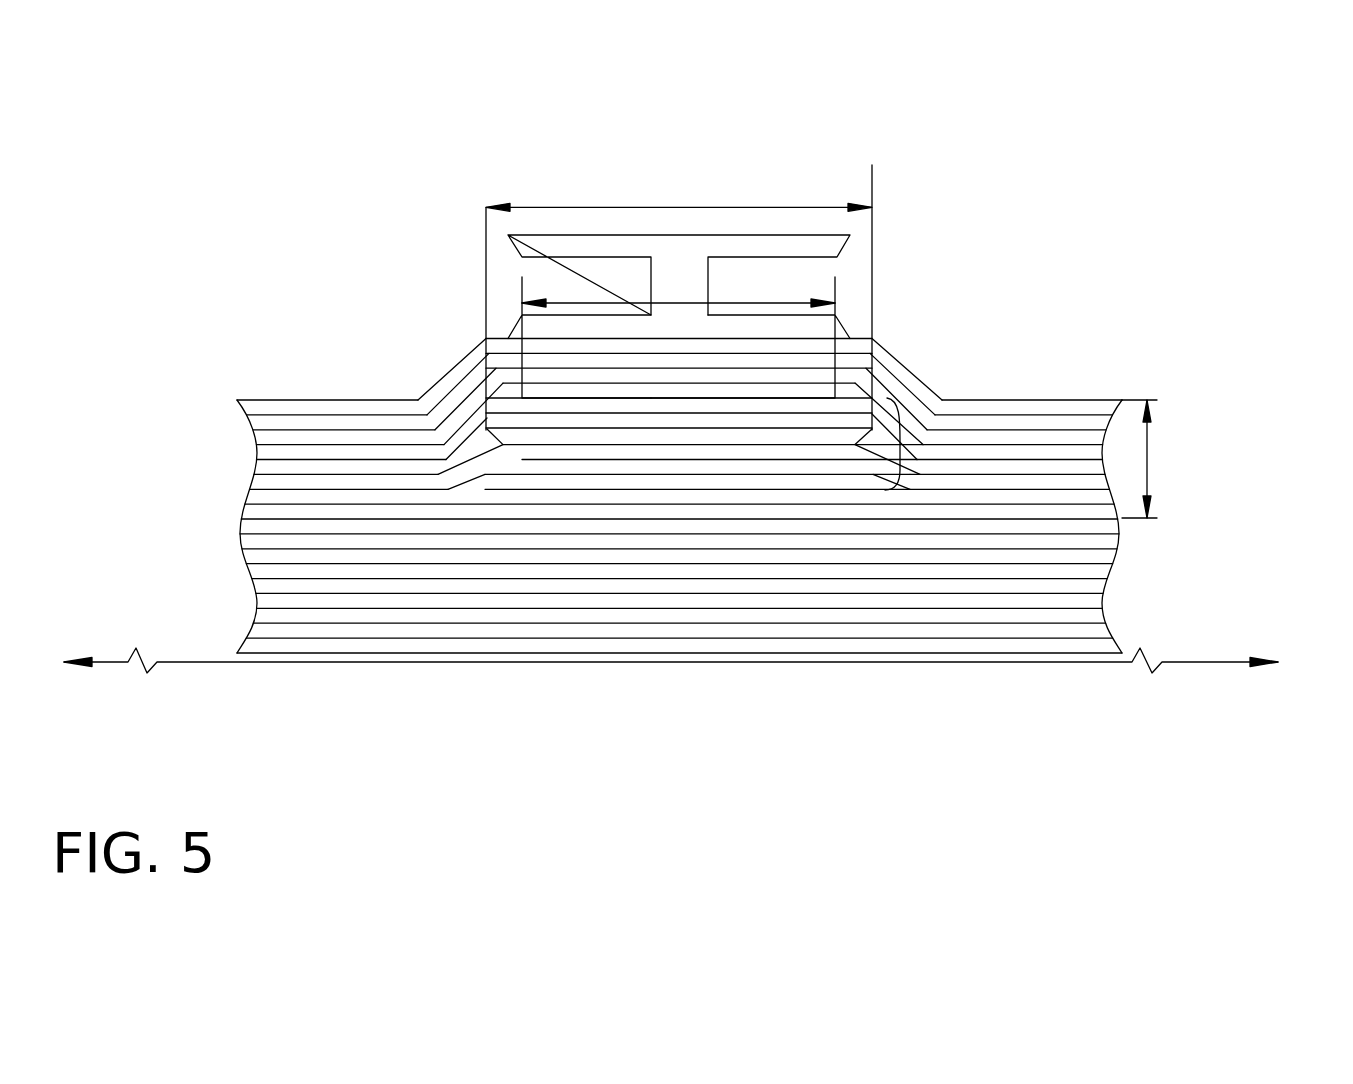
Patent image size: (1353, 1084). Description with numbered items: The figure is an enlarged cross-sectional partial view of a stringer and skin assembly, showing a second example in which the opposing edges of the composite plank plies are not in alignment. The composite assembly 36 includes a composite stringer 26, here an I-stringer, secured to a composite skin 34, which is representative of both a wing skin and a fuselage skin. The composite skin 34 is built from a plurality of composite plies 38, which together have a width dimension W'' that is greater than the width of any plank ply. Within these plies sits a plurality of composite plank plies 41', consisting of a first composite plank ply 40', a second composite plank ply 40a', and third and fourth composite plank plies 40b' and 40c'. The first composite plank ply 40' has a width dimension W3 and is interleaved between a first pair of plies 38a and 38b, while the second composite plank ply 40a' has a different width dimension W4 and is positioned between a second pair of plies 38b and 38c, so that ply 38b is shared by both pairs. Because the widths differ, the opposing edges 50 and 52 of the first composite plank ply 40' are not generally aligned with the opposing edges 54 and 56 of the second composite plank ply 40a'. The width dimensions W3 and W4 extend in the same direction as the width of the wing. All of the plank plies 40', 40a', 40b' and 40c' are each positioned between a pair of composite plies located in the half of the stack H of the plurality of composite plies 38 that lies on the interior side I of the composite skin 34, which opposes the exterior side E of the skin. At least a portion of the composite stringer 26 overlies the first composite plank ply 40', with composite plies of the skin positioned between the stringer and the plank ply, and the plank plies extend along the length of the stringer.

The composite stringer 26 is at (692, 233).
The composite skin 34 is at (1223, 488).
The composite assembly 36 is at (470, 333).
The plurality of composite plies 38 is at (223, 398).
The composite ply 38a is at (475, 355).
The composite ply 38b is at (478, 395).
The composite ply 38c is at (418, 400).
The first composite plank ply 40' is at (679, 371).
The second composite plank ply 40a' is at (740, 373).
The third composite plank ply 40b' is at (778, 499).
The fourth composite plank ply 40c' is at (609, 517).
The plurality of composite plank plies 41' is at (951, 406).
The opposing edge 50 is at (525, 390).
The opposing edge 52 is at (835, 390).
The opposing edge 54 is at (503, 445).
The opposing edge 56 is at (875, 428).
The interior side I is at (462, 295).
The width dimension W4 is at (673, 207).
The width dimension W3 is at (717, 303).
The half of a stack H is at (1147, 452).
The exterior side E is at (652, 668).
The width dimension W'' is at (671, 689).